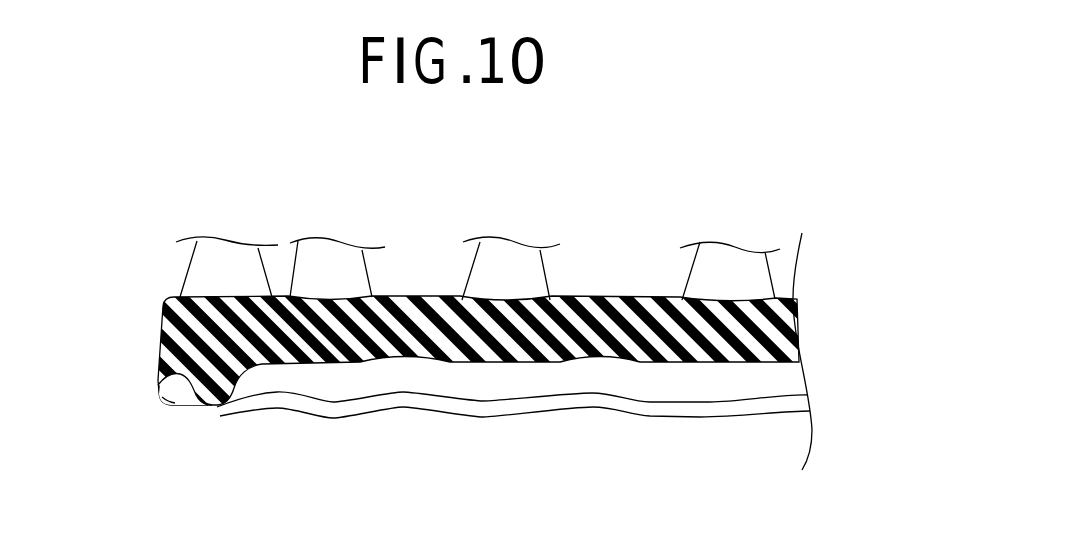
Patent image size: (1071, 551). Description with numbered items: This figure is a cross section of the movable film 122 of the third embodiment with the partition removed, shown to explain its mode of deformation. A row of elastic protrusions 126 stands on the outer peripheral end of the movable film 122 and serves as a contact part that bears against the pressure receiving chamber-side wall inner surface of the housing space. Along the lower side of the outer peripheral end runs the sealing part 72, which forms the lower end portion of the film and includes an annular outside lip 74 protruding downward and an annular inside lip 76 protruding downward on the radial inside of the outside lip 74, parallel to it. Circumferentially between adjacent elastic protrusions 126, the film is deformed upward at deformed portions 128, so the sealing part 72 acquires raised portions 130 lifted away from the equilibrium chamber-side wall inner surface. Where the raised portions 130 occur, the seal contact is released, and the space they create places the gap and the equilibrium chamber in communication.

The movable film 122 is at (138, 252).
The elastic protrusions 126 is at (224, 272).
The deformed portions 128 is at (190, 323).
The raised portions 130 is at (166, 377).
The sealing part 72 is at (185, 421).
The outside lip 74 is at (170, 399).
The inside lip 76 is at (208, 402).